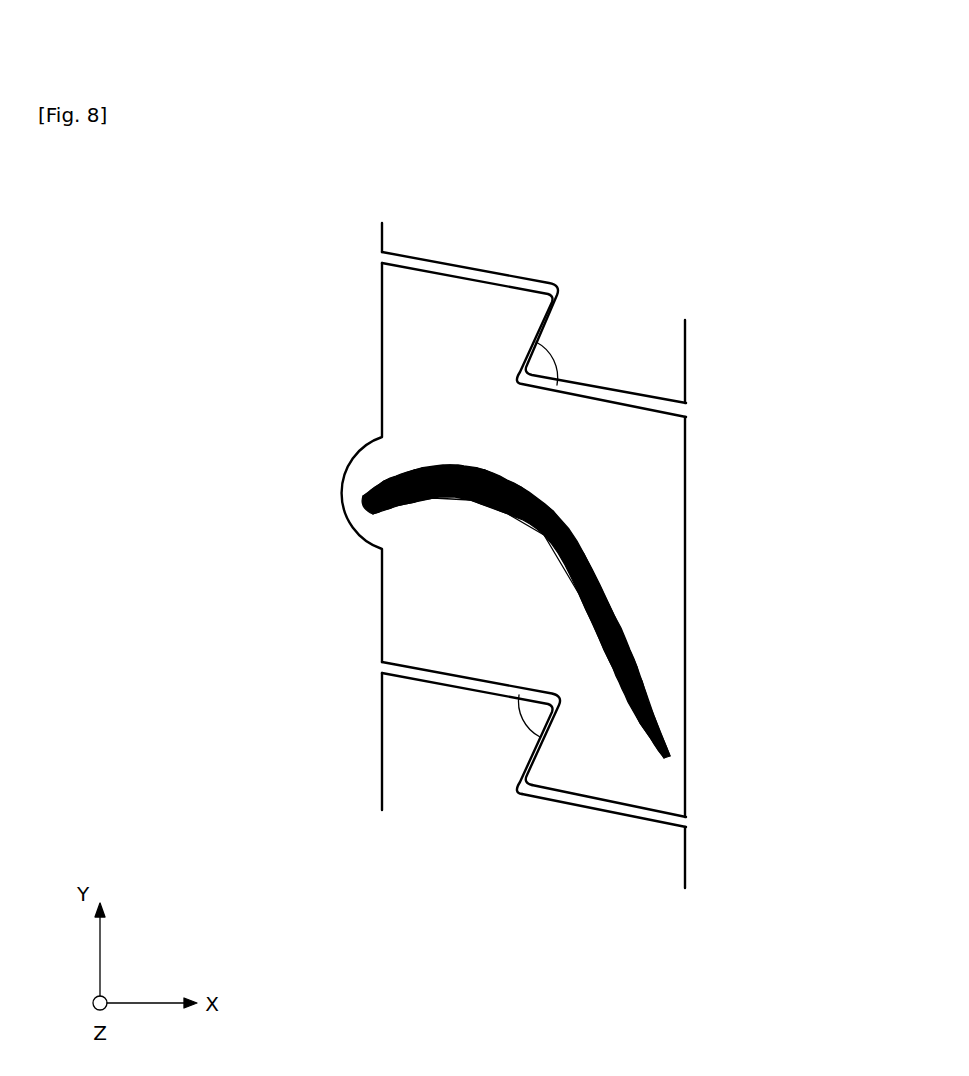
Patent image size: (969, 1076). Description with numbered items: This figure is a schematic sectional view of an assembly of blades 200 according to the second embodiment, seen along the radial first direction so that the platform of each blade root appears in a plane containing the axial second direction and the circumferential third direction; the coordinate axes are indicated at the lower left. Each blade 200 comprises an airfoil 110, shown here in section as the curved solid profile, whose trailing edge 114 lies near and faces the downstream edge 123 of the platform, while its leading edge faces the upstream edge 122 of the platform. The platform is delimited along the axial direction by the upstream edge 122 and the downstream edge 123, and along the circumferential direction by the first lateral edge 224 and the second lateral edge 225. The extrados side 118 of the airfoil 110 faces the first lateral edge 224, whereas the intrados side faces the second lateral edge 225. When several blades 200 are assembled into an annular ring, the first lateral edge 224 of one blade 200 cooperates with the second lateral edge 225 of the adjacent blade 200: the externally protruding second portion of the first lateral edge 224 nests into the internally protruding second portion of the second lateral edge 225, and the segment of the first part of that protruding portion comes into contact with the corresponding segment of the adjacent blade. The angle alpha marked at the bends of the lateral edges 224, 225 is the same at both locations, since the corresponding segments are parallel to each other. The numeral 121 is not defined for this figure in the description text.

The airfoil 110 is at (564, 544).
The trailing edge 114 is at (655, 712).
The extrados side 118 is at (408, 468).
The lower end wall portion 121 is at (665, 785).
The upstream edge 122 is at (382, 608).
The downstream edge 123 is at (687, 620).
The blade 200 is at (530, 517).
The first lateral edge 224 is at (460, 278).
The second lateral edge 225 is at (576, 494).